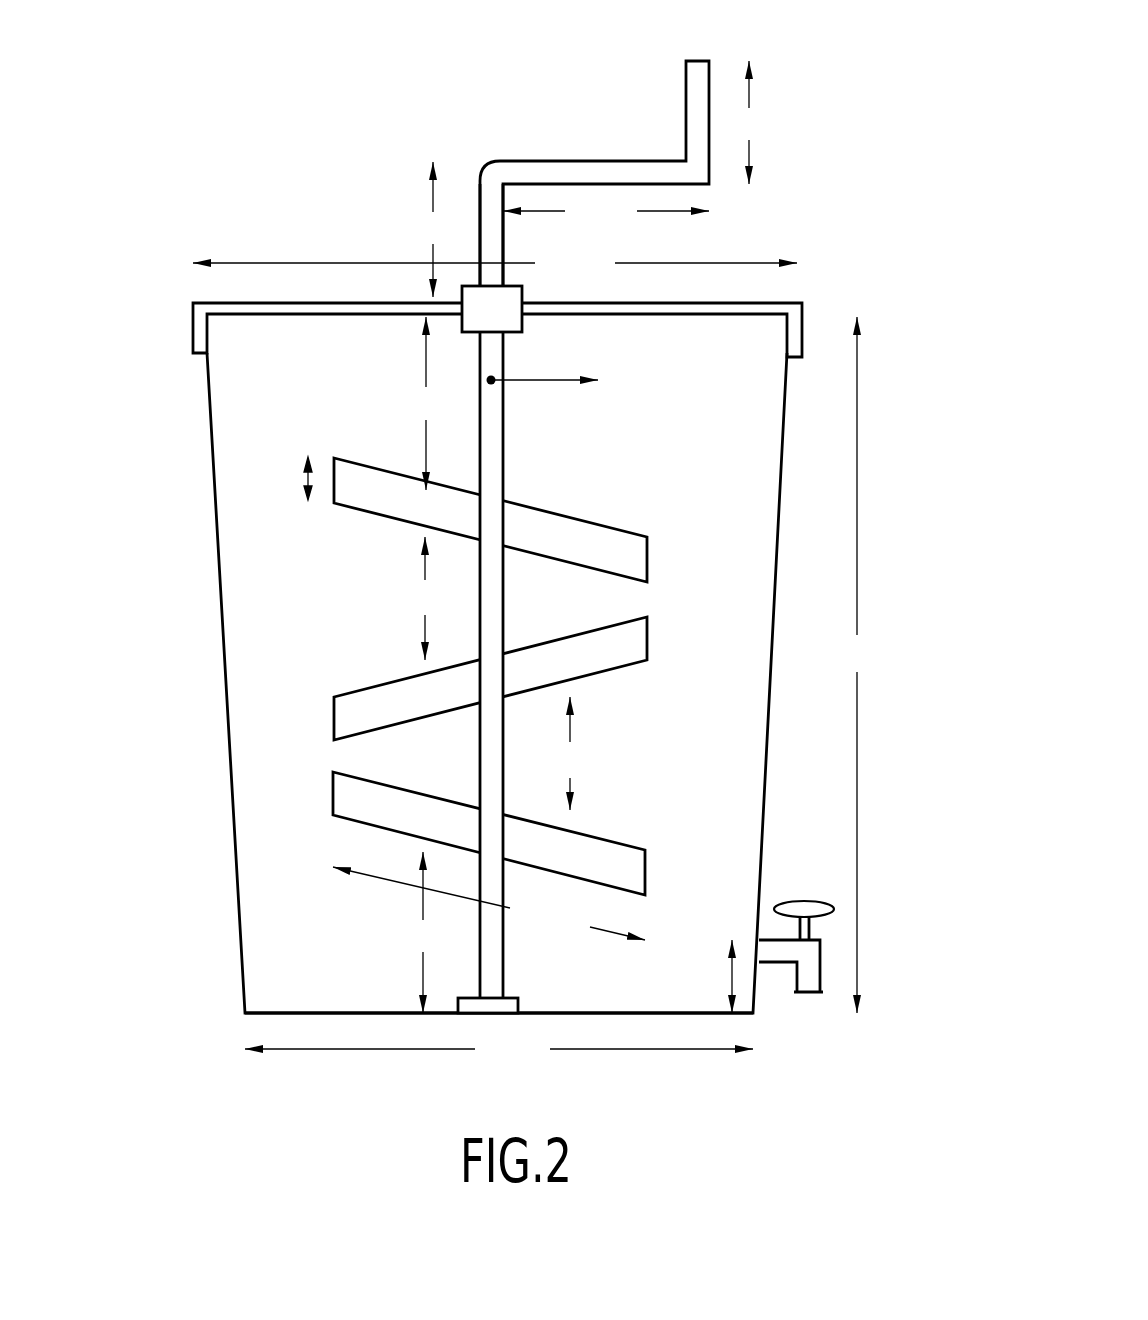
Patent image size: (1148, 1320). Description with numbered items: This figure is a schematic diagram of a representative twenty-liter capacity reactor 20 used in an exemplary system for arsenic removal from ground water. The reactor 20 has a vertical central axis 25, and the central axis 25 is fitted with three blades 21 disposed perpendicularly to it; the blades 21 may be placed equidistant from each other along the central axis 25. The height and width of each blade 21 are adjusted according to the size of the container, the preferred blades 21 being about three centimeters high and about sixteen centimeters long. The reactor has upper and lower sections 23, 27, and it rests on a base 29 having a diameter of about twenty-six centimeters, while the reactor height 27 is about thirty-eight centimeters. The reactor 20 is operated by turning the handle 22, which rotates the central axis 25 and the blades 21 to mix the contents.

The reactor 20 is at (530, 533).
The blades 21 is at (338, 507).
The handle 22 is at (710, 96).
The upper section 23 is at (193, 323).
The vertical central axis 25 is at (503, 447).
The lower section 27 is at (560, 697).
The base 29 is at (279, 1014).